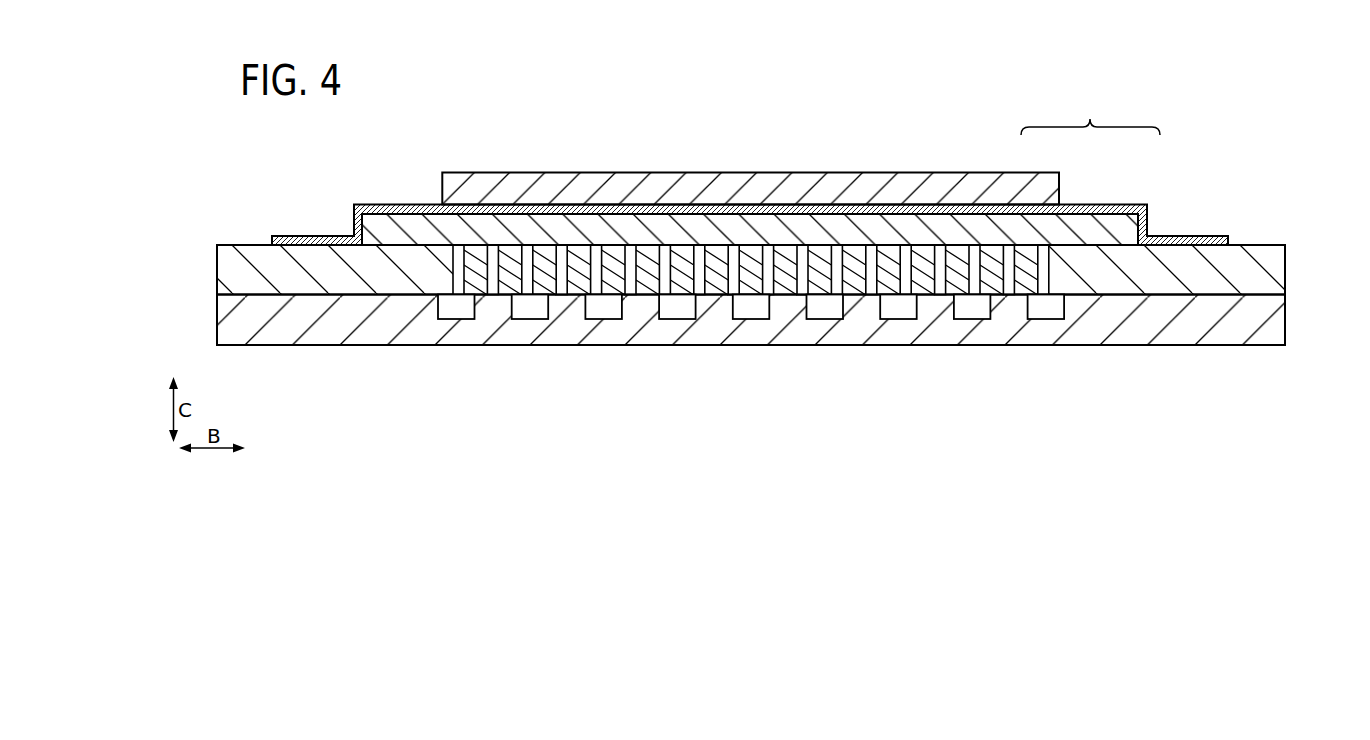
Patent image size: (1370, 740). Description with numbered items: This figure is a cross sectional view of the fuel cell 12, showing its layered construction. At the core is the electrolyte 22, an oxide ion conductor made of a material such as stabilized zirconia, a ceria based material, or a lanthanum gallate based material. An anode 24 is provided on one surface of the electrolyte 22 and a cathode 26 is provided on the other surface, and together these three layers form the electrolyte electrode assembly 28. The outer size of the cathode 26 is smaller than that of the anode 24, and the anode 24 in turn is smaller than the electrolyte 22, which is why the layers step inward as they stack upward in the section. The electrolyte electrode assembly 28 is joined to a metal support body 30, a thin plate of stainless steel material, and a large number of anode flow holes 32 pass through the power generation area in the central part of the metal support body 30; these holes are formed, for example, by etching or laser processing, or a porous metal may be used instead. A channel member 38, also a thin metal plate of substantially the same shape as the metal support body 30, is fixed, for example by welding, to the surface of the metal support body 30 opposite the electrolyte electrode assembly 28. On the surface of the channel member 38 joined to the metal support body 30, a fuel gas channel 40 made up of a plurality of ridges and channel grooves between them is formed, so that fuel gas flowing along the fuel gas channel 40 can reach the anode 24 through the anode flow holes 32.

The fuel cell 12 is at (494, 112).
The electrolyte 22 is at (1126, 209).
The anode 24 is at (1087, 223).
The cathode 26 is at (1034, 187).
The electrolyte electrode assembly 28 is at (1090, 112).
The metal support body 30 is at (1288, 264).
The anode flow holes 32 is at (872, 288).
The channel member 38 is at (1288, 310).
The fuel gas channel 40 is at (973, 313).